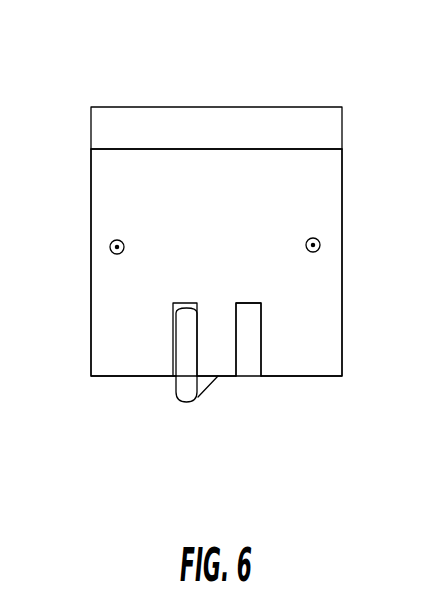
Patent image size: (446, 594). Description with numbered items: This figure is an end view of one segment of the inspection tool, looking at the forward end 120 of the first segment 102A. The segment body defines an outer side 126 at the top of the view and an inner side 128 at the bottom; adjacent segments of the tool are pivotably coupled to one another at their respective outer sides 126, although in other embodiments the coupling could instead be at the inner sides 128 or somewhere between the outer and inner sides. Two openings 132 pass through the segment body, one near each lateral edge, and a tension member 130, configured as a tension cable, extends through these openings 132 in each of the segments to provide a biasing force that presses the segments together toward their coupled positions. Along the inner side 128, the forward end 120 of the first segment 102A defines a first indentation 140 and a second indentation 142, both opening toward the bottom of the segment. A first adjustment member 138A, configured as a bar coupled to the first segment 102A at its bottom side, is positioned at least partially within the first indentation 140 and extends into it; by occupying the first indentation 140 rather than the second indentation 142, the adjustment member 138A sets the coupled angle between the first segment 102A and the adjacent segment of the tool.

The outer side 126 is at (225, 83).
The first segment 102A is at (278, 187).
The forward end 120 is at (153, 188).
The openings 132 is at (92, 250).
The tension member 130 is at (321, 245).
The first indentation 140 is at (173, 343).
The second indentation 142 is at (252, 348).
The first adjustment member 138A is at (183, 393).
The inner side 128 is at (230, 433).